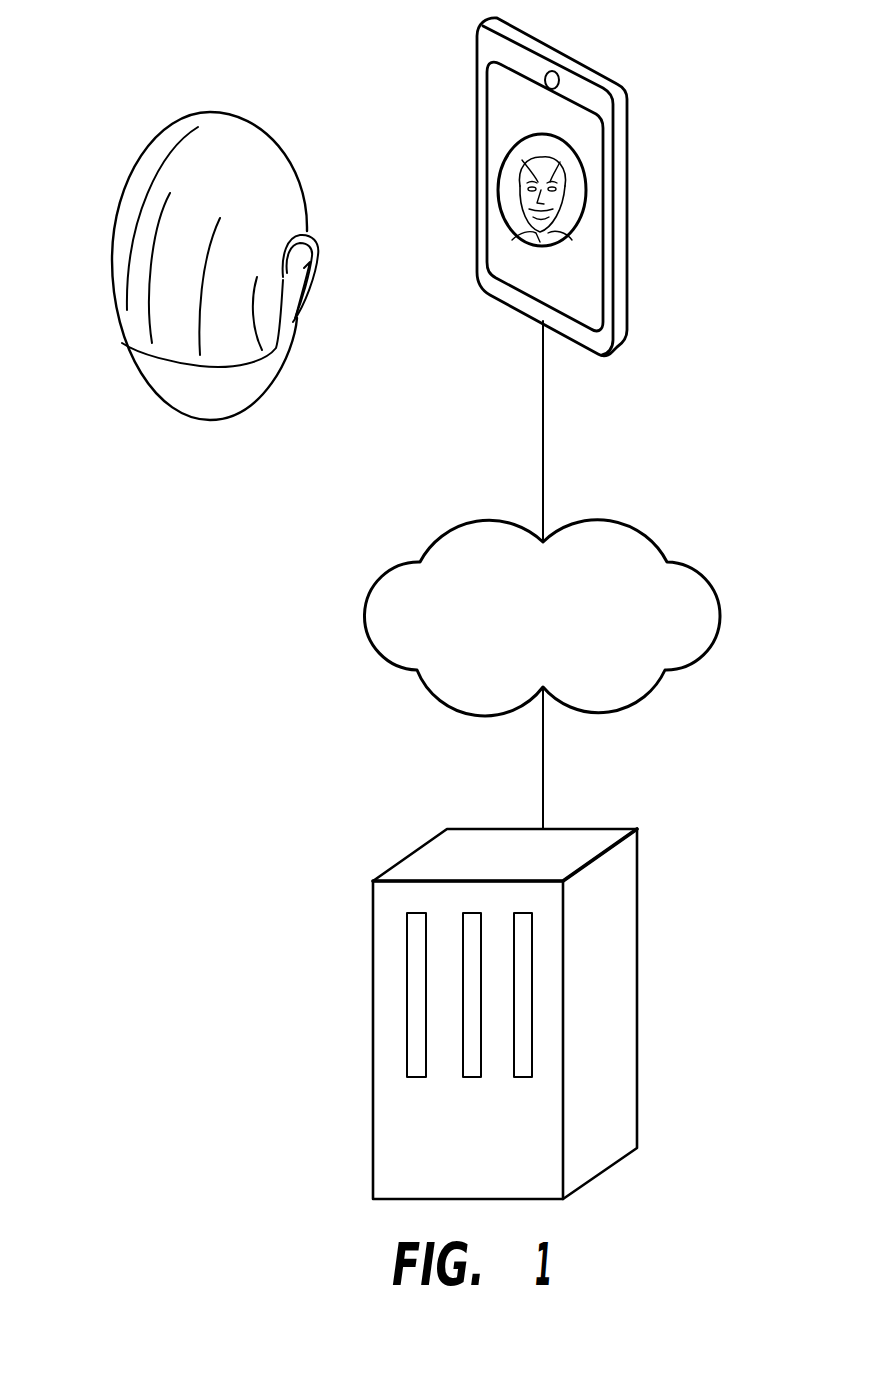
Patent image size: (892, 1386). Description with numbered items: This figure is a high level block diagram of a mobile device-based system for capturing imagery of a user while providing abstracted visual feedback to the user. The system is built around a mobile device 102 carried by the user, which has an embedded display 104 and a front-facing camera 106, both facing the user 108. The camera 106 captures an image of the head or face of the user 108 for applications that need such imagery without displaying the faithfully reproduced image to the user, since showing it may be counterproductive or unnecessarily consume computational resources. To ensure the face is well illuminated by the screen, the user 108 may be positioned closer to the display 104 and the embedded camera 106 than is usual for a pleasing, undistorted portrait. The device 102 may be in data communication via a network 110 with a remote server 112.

The device 102 is at (641, 187).
The embedded display 104 is at (503, 118).
The camera 106 is at (556, 73).
The user 108 is at (192, 107).
The network 110 is at (680, 560).
The remote server 112 is at (638, 829).